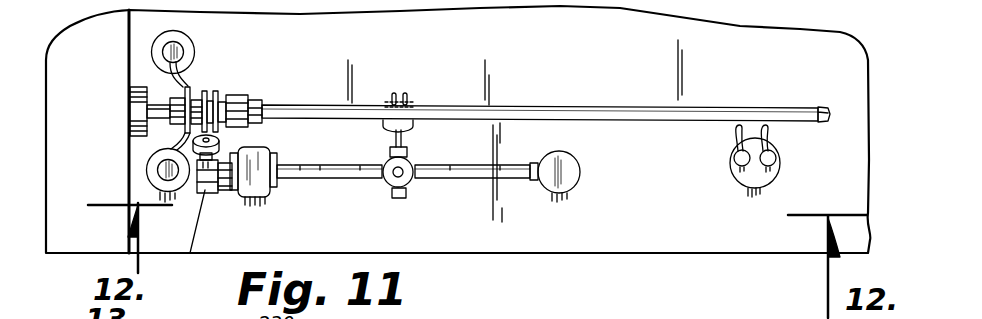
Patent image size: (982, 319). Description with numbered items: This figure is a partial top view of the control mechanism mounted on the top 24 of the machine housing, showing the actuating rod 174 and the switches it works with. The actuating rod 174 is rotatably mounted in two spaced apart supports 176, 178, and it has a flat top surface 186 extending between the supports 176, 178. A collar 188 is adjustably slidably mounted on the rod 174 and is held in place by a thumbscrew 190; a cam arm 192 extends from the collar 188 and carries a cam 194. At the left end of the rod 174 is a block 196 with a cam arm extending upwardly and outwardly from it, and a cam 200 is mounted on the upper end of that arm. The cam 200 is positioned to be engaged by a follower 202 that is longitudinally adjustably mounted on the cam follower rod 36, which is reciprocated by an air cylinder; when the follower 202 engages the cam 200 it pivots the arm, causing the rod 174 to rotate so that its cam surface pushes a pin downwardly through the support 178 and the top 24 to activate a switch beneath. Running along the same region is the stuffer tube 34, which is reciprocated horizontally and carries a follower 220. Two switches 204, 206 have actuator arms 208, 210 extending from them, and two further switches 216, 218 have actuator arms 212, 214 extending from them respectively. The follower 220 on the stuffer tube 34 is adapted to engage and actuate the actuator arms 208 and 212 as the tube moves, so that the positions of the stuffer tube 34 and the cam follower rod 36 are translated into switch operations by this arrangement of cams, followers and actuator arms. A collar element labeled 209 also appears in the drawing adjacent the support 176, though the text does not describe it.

The top 24 is at (713, 242).
The stuffer tube 34 is at (535, 108).
The cam follower rod 36 is at (828, 106).
The actuating rod 174 is at (348, 178).
The support 176 is at (257, 185).
The support 178 is at (572, 170).
The flat top surface 186 is at (517, 176).
The collar 188 is at (397, 198).
The thumbscrew 190 is at (410, 178).
The cam arm 192 is at (402, 140).
The cam 194 is at (383, 135).
The block 196 is at (184, 237).
The cam 200 is at (218, 190).
The follower 202 is at (235, 95).
The switch 204 is at (148, 178).
The switch 206 is at (152, 55).
The actuator arm 208 is at (167, 140).
The collar 209 is at (235, 152).
The actuator arm 210 is at (130, 84).
The actuator arm 212 is at (735, 135).
The actuator arm 214 is at (772, 132).
The switch 216 is at (741, 163).
The switch 218 is at (775, 168).
The follower 220 is at (190, 88).